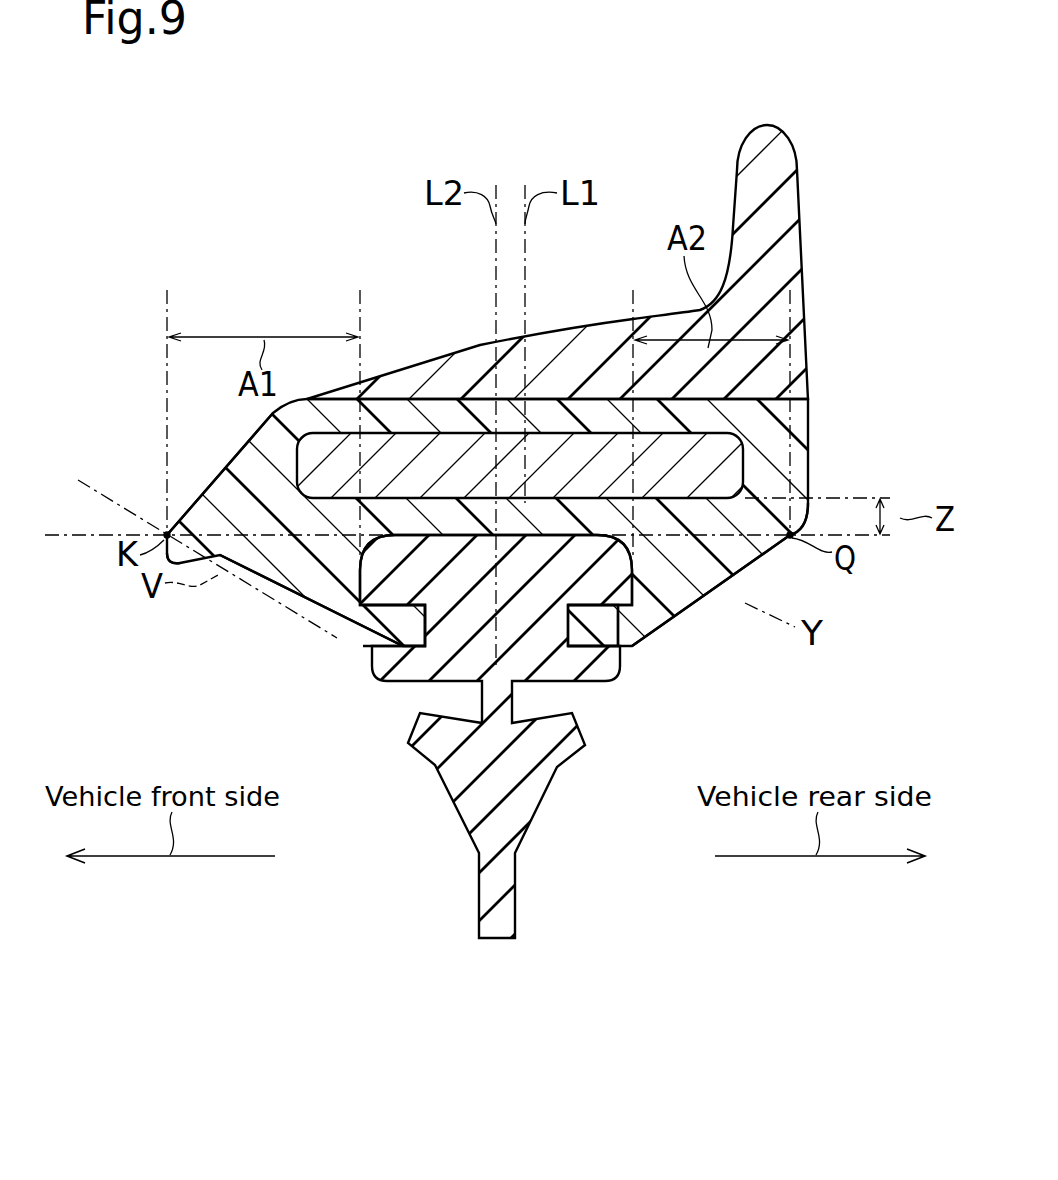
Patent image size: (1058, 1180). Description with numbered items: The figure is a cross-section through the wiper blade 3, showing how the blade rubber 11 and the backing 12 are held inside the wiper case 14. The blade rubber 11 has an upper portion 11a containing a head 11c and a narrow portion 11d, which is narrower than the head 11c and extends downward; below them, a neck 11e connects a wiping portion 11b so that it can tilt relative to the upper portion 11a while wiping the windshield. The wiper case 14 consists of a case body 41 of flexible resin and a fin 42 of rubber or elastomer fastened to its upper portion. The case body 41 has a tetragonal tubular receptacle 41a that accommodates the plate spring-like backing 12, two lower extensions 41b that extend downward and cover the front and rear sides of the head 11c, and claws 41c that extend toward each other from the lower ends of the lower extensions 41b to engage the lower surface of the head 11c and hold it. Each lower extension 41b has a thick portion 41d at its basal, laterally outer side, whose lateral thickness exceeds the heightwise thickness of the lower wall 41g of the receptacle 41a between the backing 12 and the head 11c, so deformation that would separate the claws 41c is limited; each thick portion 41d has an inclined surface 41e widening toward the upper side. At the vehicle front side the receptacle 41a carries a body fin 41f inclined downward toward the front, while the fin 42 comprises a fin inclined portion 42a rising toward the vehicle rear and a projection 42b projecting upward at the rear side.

The wiper blade 3 is at (272, 251).
The blade rubber 11 is at (585, 733).
The upper portion 11a is at (665, 572).
The wiping portion 11b is at (497, 940).
The head 11c is at (370, 612).
The narrow portion 11d is at (403, 681).
The neck 11e is at (490, 690).
The backing 12 is at (553, 450).
The wiper case 14 is at (893, 337).
The case body 41 is at (808, 414).
The receptacle 41a is at (386, 412).
The lower extensions 41b is at (293, 587).
The claws 41c is at (392, 645).
The thick portion 41d is at (222, 575).
The inclined surface 41e is at (303, 617).
The body fin 41f is at (239, 453).
The lower wall 41g is at (433, 518).
The fin 42 is at (808, 352).
The fin inclined portion 42a is at (472, 349).
The projection 42b is at (762, 127).